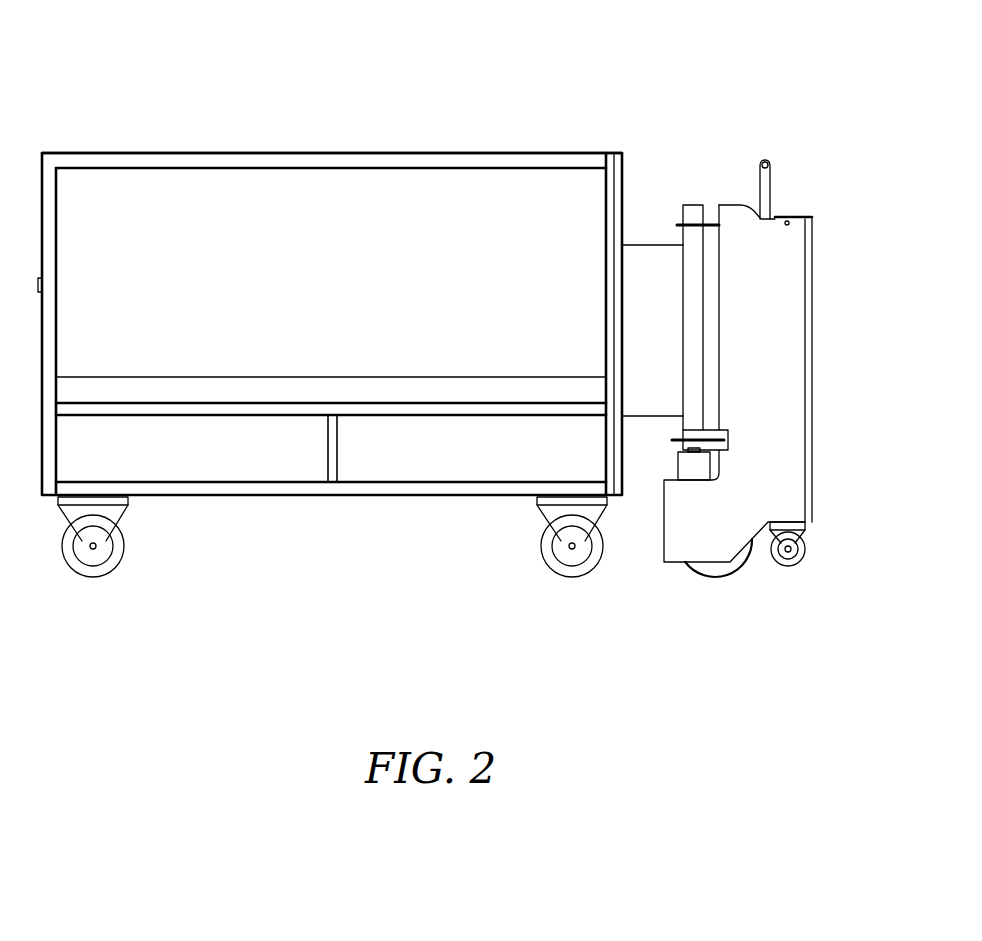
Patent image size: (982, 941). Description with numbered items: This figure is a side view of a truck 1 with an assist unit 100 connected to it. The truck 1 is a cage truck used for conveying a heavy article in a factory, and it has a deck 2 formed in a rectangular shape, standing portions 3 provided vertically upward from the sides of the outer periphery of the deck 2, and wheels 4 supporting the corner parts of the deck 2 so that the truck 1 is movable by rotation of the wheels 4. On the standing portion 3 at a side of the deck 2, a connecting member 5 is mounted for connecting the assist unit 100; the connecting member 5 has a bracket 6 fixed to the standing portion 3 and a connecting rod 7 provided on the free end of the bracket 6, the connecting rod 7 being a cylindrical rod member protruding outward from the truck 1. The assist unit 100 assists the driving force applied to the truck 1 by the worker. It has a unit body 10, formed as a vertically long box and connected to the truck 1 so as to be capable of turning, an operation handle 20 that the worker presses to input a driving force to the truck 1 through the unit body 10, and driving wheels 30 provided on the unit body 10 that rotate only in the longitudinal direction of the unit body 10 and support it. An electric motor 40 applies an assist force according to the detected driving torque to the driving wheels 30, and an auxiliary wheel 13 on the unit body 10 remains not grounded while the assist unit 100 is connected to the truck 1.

The truck 1 is at (552, 112).
The deck 2 is at (411, 377).
The standing portion 3 is at (134, 153).
The wheel 4 is at (93, 573).
The connecting member 5 is at (675, 225).
The bracket 6 is at (661, 267).
The connecting rod 7 is at (698, 206).
The unit body 10 is at (790, 301).
The auxiliary wheel 13 is at (788, 566).
The operation handle 20 is at (766, 158).
The driving wheel 30 is at (713, 569).
The electric motor 40 is at (694, 465).
The assist unit 100 is at (796, 147).